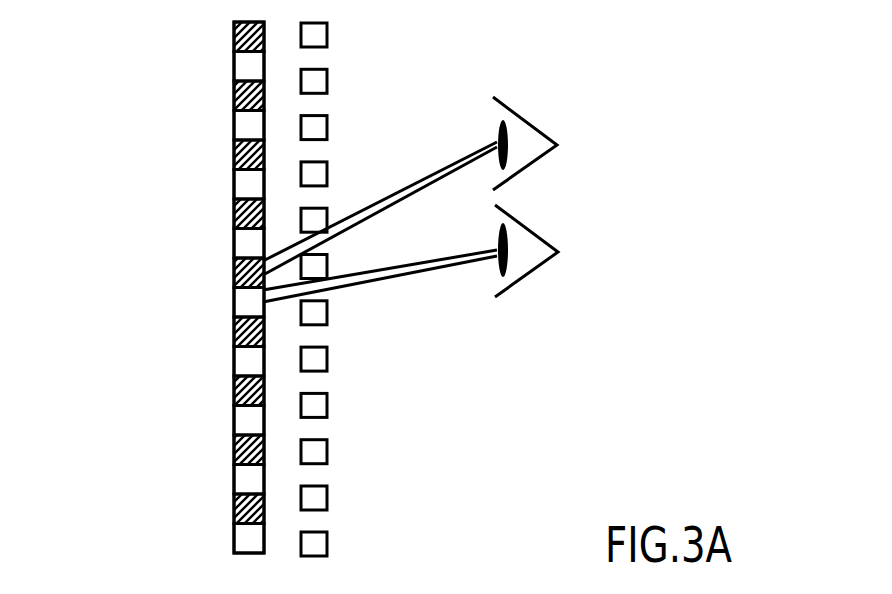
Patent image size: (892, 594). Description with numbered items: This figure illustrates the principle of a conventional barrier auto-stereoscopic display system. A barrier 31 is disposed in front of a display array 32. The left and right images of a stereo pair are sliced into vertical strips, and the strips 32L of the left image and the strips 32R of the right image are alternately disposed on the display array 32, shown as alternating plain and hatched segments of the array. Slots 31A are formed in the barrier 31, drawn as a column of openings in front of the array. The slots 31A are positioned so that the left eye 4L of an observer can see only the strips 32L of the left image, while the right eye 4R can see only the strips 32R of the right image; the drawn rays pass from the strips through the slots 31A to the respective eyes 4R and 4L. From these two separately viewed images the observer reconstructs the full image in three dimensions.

The display array 32 is at (222, 467).
The strips of the right image 32R is at (238, 37).
The strips of the left image 32L is at (248, 66).
The barrier 31 is at (327, 540).
The slots 31A is at (312, 477).
The right eye 4R is at (522, 123).
The left eye 4L is at (518, 272).